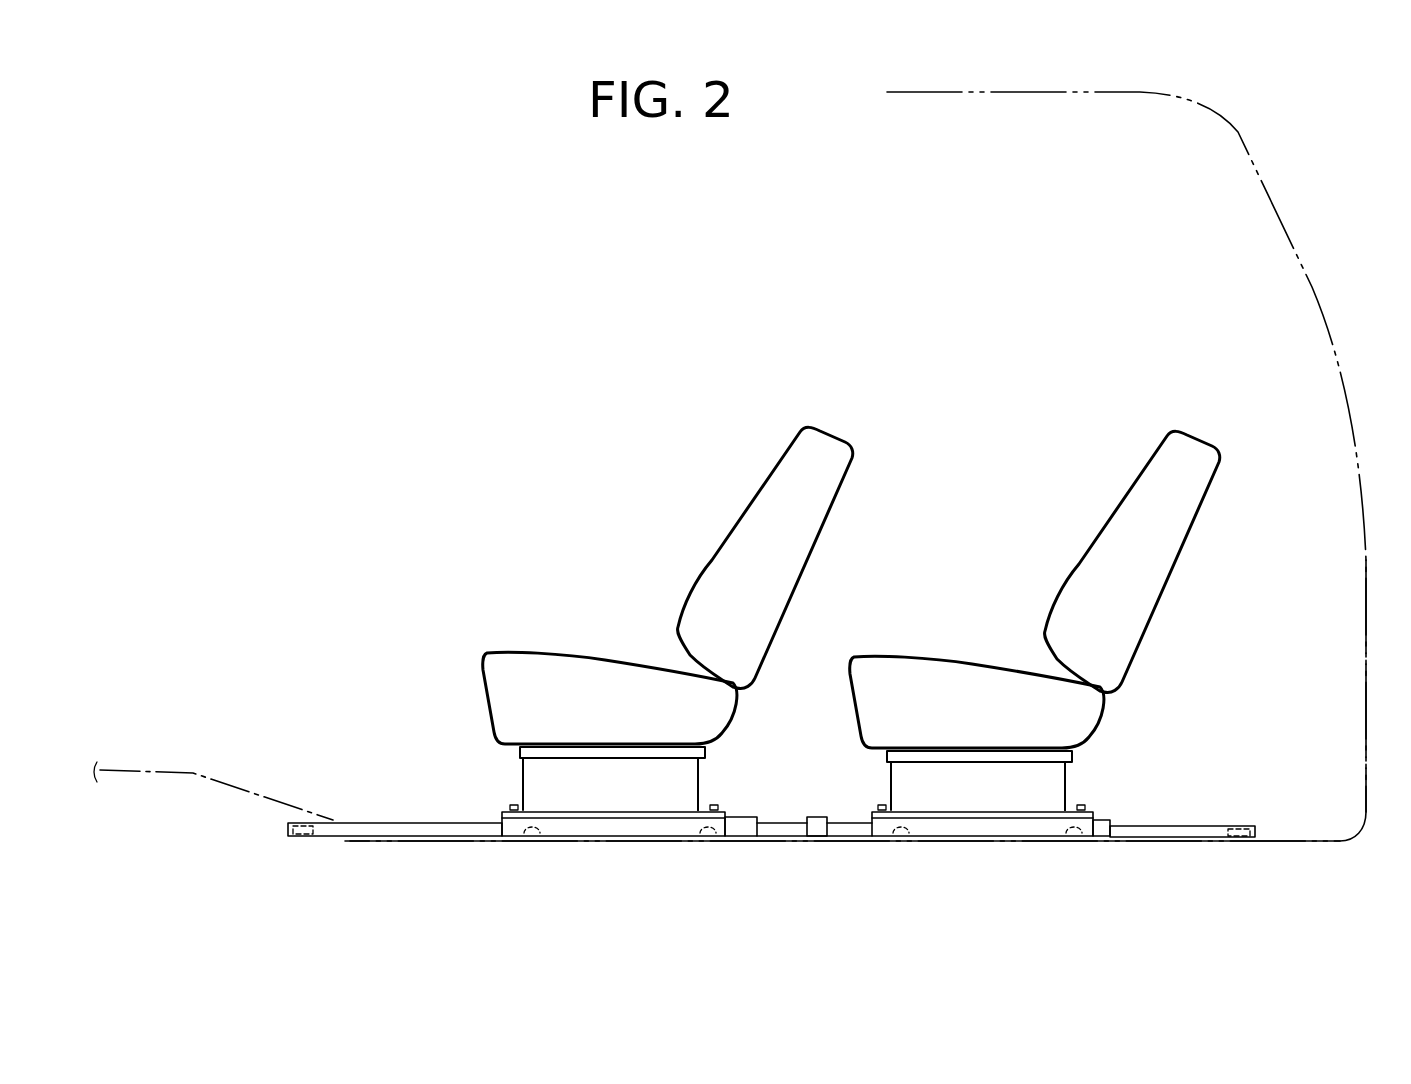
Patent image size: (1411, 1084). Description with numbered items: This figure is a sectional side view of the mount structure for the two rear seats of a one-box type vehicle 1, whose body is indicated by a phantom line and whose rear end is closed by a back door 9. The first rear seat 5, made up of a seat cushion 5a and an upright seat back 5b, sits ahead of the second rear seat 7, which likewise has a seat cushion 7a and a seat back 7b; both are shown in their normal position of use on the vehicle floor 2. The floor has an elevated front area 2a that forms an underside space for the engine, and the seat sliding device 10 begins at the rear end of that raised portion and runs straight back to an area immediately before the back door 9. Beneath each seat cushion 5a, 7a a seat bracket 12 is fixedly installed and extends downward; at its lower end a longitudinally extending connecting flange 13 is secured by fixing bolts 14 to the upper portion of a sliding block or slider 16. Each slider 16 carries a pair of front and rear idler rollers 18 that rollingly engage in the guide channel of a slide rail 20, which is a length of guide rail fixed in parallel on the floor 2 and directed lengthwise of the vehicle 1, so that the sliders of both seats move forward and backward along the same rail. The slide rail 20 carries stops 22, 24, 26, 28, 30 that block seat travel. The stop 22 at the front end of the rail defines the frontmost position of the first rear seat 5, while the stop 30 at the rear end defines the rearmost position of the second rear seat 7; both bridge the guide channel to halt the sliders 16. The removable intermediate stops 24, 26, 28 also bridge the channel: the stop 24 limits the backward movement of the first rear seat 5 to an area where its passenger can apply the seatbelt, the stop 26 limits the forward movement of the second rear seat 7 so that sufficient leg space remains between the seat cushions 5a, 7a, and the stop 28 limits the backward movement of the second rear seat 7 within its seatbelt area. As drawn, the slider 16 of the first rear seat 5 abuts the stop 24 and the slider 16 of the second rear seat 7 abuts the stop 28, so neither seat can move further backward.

The vehicle 1 is at (1284, 159).
The vehicle floor 2 is at (1318, 845).
The front area of vehicle floor 2a is at (178, 772).
The first rear seat 5 is at (668, 585).
The seat cushion 5a is at (548, 673).
The seat back 5b is at (772, 507).
The second rear seat 7 is at (1035, 589).
The seat cushion 7a is at (977, 669).
The seat back 7b is at (1132, 561).
The back door 9 is at (1338, 430).
The seat sliding device 10 is at (472, 806).
The seat bracket 12 is at (687, 812).
The connecting flange 13 is at (680, 772).
The fixing bolt 14 is at (517, 805).
The slider 16 is at (613, 825).
The idler roller 18 is at (535, 832).
The slide rail 20 is at (422, 836).
The stop 22 is at (308, 843).
The stop 24 is at (747, 828).
The stop 26 is at (818, 828).
The stop 28 is at (1098, 828).
The stop 30 is at (1238, 838).